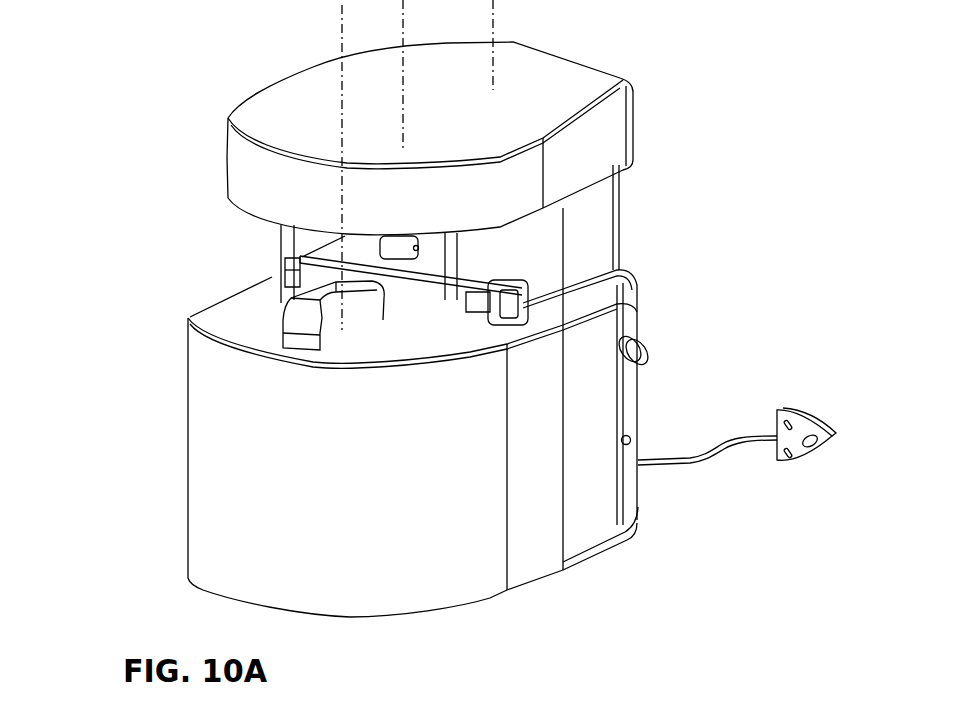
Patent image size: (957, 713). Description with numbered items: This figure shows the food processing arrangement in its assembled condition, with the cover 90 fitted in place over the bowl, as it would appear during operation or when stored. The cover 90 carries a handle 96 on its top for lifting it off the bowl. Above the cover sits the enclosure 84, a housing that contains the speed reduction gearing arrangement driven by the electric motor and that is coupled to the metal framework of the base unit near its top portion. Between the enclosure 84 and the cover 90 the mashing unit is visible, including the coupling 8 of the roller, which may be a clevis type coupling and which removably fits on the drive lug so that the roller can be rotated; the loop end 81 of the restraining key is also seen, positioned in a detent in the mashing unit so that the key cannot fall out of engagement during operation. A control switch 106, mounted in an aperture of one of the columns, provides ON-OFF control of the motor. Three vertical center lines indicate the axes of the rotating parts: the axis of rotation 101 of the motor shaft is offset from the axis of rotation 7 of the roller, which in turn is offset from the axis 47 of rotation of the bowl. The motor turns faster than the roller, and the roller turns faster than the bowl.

The axis of rotation of the bowl 47 is at (338, 28).
The axis of rotation of the roller 7 is at (405, 23).
The axis of rotation of the motor shaft 101 is at (497, 20).
The enclosure 84 is at (534, 97).
The coupling 8 is at (392, 249).
The loop end 81 is at (527, 290).
The handle 96 is at (303, 316).
The cover 90 is at (222, 467).
The control switch 106 is at (648, 338).